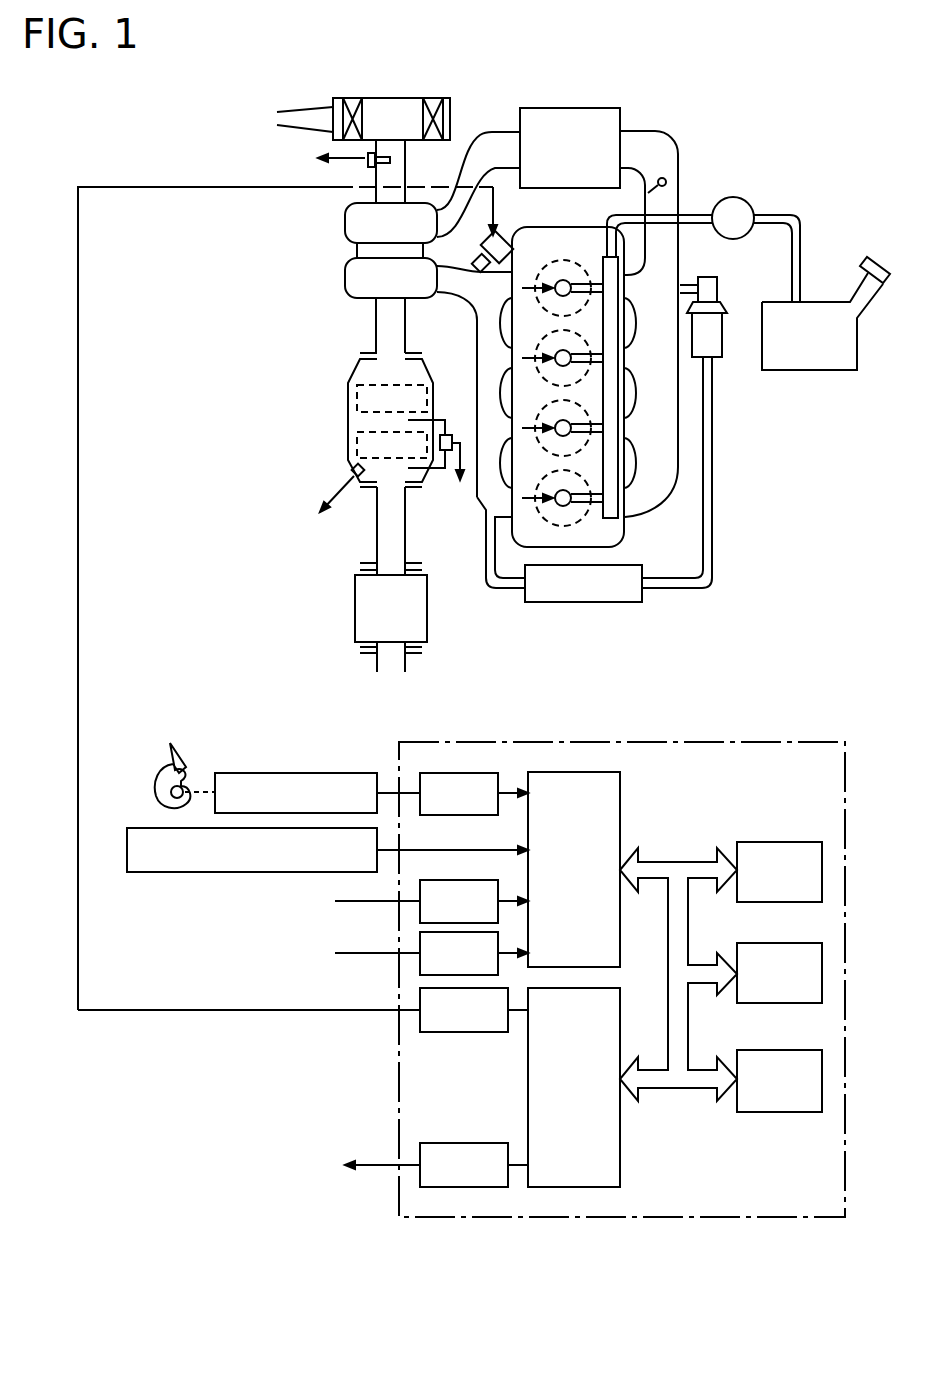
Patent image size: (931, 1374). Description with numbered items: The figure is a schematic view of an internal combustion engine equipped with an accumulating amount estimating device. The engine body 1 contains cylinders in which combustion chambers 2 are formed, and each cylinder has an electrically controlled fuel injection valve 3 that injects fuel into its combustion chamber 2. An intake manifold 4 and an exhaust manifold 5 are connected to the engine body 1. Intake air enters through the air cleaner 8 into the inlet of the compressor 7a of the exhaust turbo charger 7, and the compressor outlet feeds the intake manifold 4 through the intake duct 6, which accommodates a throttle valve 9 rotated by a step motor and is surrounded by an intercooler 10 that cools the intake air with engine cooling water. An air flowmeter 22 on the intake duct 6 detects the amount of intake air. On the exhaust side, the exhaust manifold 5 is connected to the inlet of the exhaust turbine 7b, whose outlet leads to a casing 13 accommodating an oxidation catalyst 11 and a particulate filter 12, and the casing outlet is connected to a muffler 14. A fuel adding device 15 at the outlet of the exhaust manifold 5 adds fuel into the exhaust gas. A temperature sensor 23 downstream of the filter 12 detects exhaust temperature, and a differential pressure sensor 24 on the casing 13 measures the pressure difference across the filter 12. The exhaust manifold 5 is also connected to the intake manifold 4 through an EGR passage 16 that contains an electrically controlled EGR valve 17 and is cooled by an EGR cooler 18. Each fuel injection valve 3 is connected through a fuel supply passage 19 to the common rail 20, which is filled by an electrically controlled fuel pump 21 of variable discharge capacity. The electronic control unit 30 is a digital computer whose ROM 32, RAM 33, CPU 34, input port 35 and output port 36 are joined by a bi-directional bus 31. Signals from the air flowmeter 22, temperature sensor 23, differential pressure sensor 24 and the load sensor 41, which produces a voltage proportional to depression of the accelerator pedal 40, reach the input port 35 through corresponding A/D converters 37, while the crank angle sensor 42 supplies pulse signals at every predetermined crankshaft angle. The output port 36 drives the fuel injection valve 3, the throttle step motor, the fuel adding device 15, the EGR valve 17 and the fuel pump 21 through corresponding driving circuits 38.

The engine body 1 is at (640, 527).
The combustion chamber 2 is at (550, 263).
The fuel injection valve 3 is at (566, 282).
The intake manifold 4 is at (657, 467).
The exhaust manifold 5 is at (477, 500).
The intake duct 6 is at (648, 138).
The exhaust turbo charger 7 is at (353, 253).
The compressor 7a is at (345, 226).
The exhaust turbine 7b is at (345, 290).
The air cleaner 8 is at (388, 110).
The throttle valve 9 is at (666, 178).
The intercooler 10 is at (567, 118).
The oxidation catalyst 11 is at (348, 387).
The particulate filter 12 is at (348, 445).
The casing 13 is at (348, 420).
The muffler 14 is at (355, 604).
The fuel adding device 15 is at (502, 243).
The EGR passage 16 is at (713, 530).
The EGR valve 17 is at (717, 288).
The EGR cooler 18 is at (584, 602).
The fuel supply passage 19 is at (583, 283).
The common rail 20 is at (618, 430).
The fuel pump 21 is at (740, 198).
The air flowmeter 22 is at (368, 162).
The temperature sensor 23 is at (358, 478).
The differential pressure sensor 24 is at (447, 435).
The electronic control unit 30 is at (745, 741).
The bi-directional bus 31 is at (676, 872).
The read only memory 32 is at (780, 842).
The random access memory 33 is at (780, 944).
The central processing unit 34 is at (780, 1050).
The input port 35 is at (605, 772).
The output port 36 is at (605, 988).
The A/D converter 37 is at (480, 773).
The driving circuit 38 is at (420, 1022).
The accelerator pedal 40 is at (187, 754).
The load sensor 41 is at (313, 773).
The crank angle sensor 42 is at (233, 872).